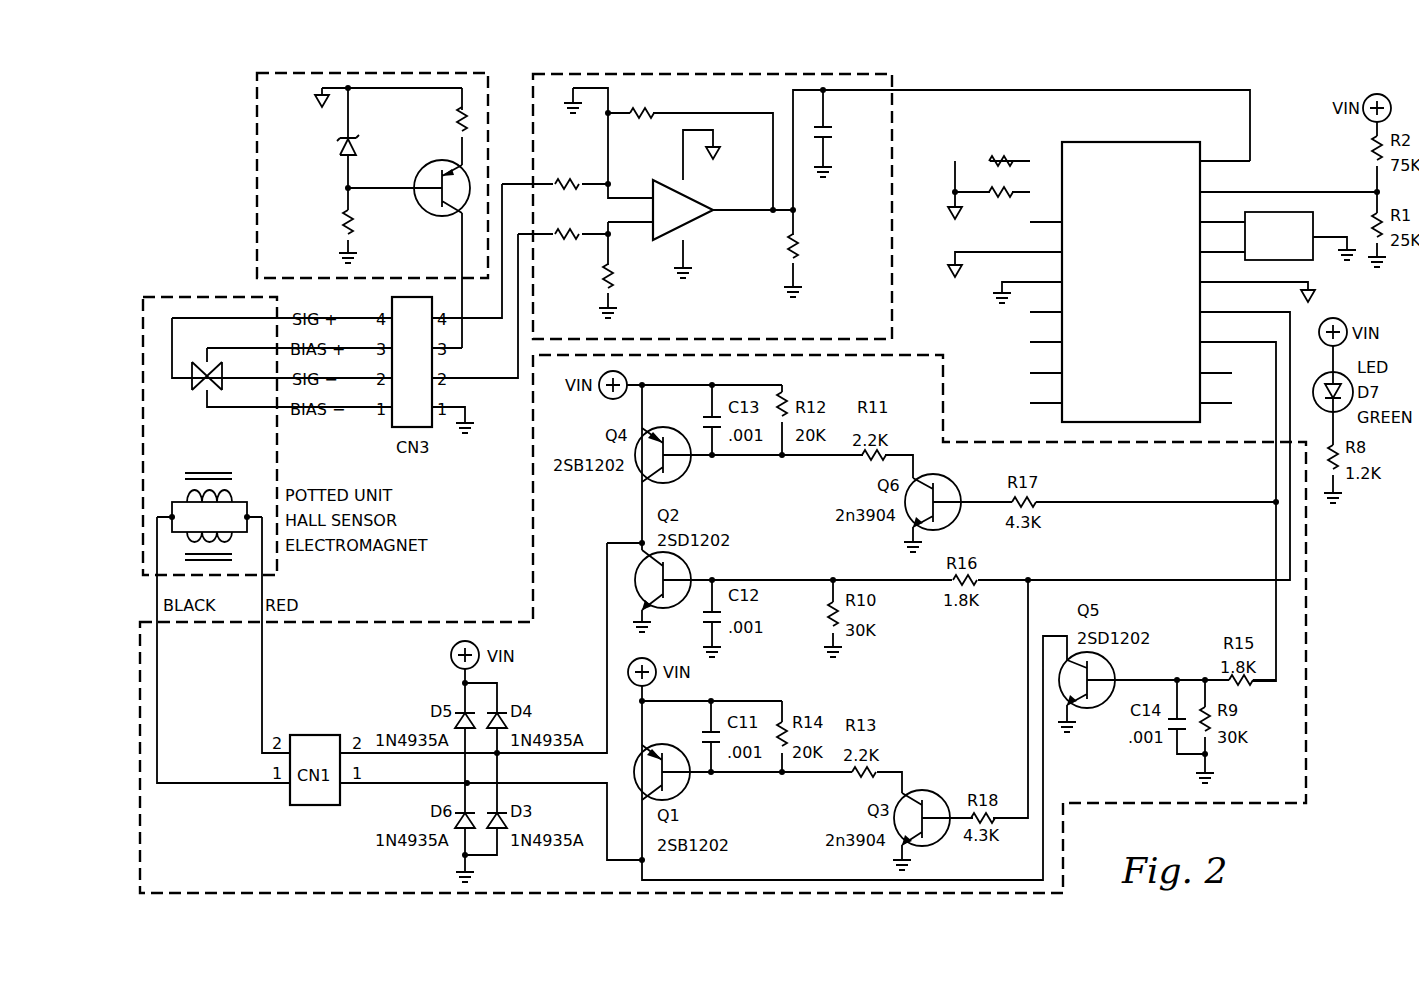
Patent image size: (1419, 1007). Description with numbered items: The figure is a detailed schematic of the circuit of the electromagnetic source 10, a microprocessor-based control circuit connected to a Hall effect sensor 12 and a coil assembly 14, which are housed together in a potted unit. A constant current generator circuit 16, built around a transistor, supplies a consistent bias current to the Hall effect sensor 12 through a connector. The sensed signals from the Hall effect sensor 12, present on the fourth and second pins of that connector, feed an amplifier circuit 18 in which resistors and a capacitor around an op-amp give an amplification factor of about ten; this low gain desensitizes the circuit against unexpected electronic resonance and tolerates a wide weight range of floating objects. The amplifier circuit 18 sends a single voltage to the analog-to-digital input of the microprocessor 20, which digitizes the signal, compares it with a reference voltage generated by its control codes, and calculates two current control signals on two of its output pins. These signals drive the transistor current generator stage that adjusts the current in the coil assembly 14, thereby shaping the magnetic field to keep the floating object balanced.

The electromagnetic source 10 is at (1323, 835).
The Hall effect sensor 12 is at (192, 403).
The coil assembly 14 is at (231, 464).
The constant current generator circuit 16 is at (239, 190).
The amplifier circuit 18 is at (903, 300).
The microprocessor 20 is at (1275, 168).